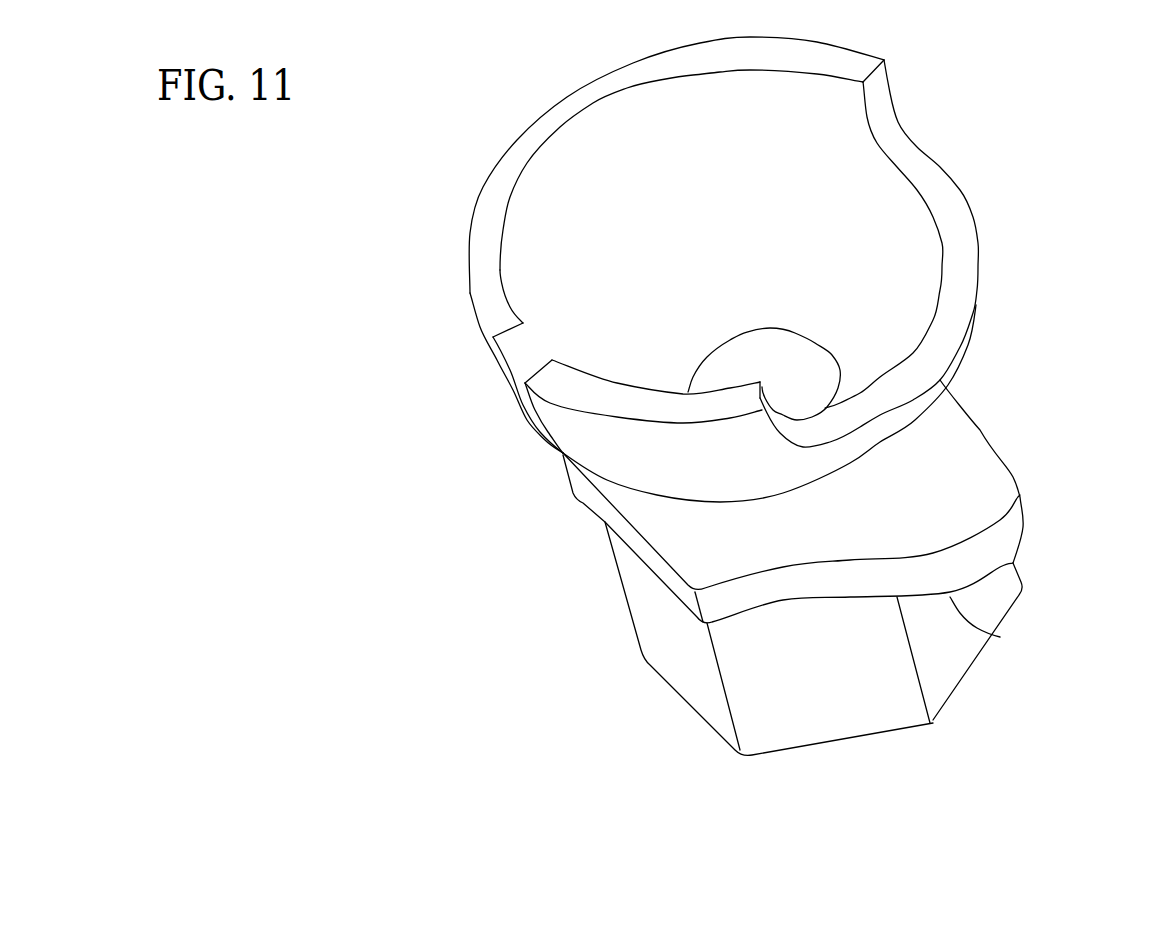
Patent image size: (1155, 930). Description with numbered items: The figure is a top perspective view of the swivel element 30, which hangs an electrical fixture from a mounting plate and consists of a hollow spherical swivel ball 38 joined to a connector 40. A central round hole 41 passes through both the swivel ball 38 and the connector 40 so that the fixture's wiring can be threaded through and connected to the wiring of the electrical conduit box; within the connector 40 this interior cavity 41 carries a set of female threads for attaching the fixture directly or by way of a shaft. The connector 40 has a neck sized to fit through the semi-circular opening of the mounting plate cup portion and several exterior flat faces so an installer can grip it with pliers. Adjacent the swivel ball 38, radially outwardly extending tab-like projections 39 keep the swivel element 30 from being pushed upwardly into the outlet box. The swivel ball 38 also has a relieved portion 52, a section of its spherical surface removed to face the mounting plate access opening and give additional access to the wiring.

The swivel element 30 is at (373, 510).
The swivel ball 38 is at (483, 277).
The tab-like projections 39 is at (993, 635).
The connector 40 is at (773, 753).
The central round hole 41 is at (838, 364).
The relieved portion 52 is at (880, 110).